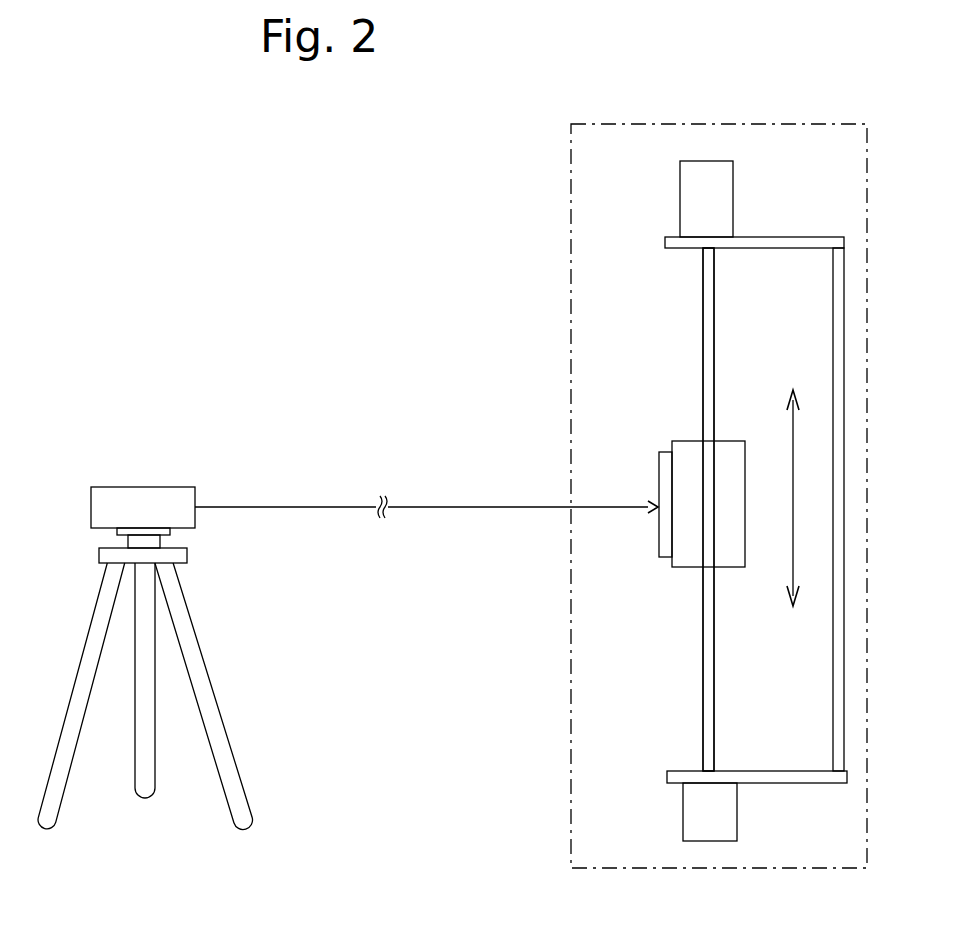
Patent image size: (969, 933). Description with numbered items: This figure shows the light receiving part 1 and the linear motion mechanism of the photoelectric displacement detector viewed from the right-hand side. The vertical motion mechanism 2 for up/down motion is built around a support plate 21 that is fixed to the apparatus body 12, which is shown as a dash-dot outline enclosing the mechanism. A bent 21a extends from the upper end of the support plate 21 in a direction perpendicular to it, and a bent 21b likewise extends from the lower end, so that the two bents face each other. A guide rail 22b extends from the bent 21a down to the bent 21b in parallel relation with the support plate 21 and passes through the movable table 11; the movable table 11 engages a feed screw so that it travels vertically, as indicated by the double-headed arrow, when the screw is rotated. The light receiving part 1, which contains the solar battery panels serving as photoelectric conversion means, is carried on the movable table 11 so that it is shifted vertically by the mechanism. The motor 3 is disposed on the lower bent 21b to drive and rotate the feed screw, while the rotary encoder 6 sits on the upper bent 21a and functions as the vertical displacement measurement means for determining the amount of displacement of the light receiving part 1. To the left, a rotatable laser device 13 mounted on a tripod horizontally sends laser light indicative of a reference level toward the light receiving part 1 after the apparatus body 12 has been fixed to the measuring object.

The light receiving part 1 is at (656, 477).
The vertical motion mechanism 2 is at (681, 646).
The motor 3 is at (710, 817).
The rotary encoder 6 is at (707, 190).
The movable table 11 is at (687, 440).
The apparatus body 12 is at (760, 118).
The rotatable laser device 13 is at (152, 485).
The support plate 21 is at (833, 720).
The bent 21a is at (805, 236).
The bent 21b is at (806, 785).
The guide rail 22b is at (703, 270).